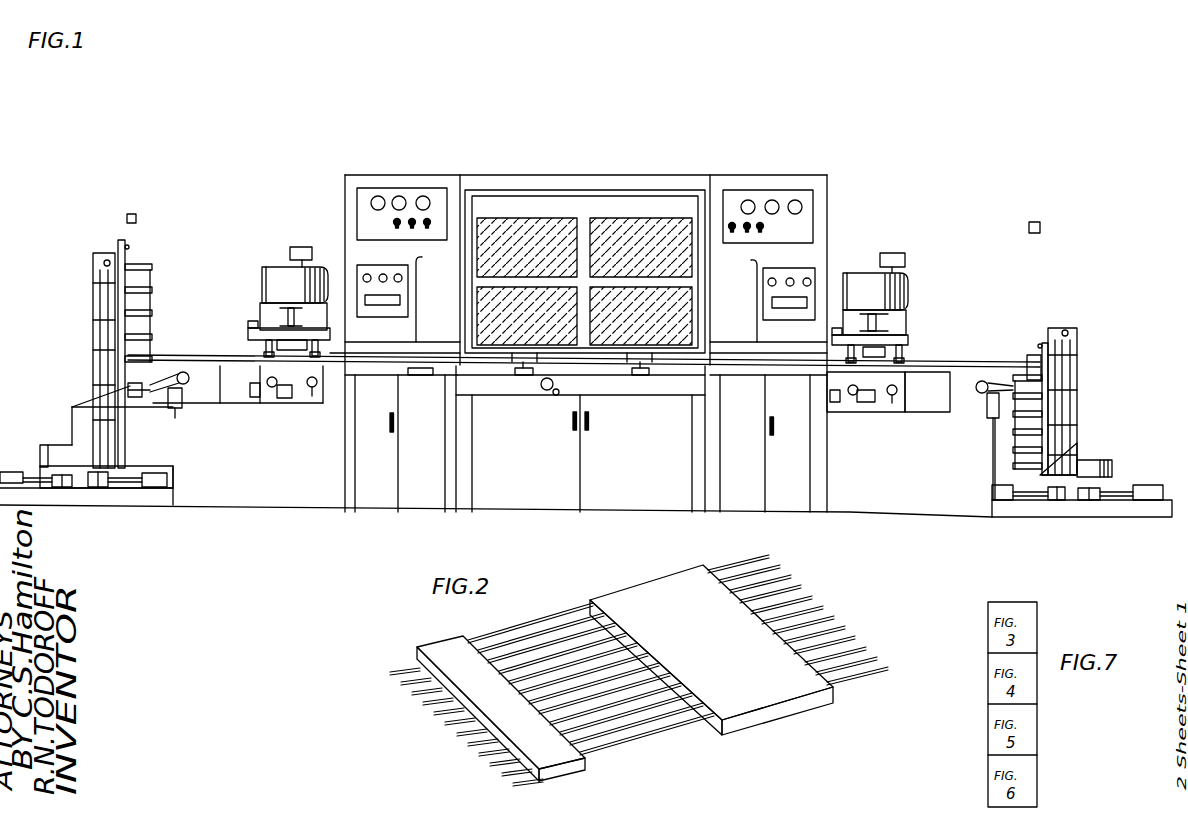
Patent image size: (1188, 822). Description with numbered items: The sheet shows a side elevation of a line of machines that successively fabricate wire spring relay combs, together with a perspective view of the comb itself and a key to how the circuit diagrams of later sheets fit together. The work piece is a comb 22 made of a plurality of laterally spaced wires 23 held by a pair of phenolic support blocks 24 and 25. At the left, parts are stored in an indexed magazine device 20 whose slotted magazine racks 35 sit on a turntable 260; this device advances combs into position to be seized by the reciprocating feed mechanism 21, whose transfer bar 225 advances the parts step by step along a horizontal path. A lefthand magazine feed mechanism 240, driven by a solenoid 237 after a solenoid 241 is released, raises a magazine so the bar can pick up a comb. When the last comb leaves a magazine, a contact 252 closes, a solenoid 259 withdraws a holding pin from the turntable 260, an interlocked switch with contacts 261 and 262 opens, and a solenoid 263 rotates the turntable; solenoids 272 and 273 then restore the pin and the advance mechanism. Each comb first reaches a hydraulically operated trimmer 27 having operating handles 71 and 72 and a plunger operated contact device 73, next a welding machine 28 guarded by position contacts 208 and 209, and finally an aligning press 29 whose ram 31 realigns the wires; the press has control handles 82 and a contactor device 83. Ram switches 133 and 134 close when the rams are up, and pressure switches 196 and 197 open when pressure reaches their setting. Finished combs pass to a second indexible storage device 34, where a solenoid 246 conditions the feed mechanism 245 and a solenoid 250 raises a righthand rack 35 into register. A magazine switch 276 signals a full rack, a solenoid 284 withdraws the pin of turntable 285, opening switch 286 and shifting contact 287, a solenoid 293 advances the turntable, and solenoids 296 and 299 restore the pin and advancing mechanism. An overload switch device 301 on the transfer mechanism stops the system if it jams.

In FIG. 1, the indexed magazine device 20 is at (95, 206).
In FIG. 1, the reciprocating feed mechanism 21 is at (160, 354).
In FIG. 1, the wire spring relay comb 22 is at (135, 398).
In FIG. 2, the wire spring relay comb 22 is at (625, 580).
In FIG. 2, the wires 23 is at (888, 667).
In FIG. 2, the phenolic support block 24 is at (570, 771).
In FIG. 2, the phenolic support block 25 is at (770, 696).
In FIG. 1, the hydraulically operated trimmer 27 is at (272, 275).
In FIG. 1, the welding machine 28 is at (640, 236).
In FIG. 1, the press 29 is at (858, 278).
In FIG. 1, the ram 31 is at (905, 340).
In FIG. 1, the second indexible storage device 34 is at (1059, 297).
In FIG. 1, the magazine rack 35 is at (140, 266).
In FIG. 1, the operating handle 71 is at (267, 382).
In FIG. 1, the operating handle 72 is at (320, 382).
In FIG. 1, the plunger operated contact device 73 is at (286, 398).
In FIG. 1, the control handle 82 is at (890, 397).
In FIG. 1, the plunger-operated contactor device 83 is at (862, 403).
In FIG. 1, the ram switch 133 is at (248, 326).
In FIG. 1, the ram switch 134 is at (832, 339).
In FIG. 1, the pressure switch 196 is at (303, 248).
In FIG. 1, the pressure switch 197 is at (895, 258).
In FIG. 1, the contact 208 is at (523, 376).
In FIG. 1, the contact 209 is at (640, 376).
In FIG. 1, the transfer bar 225 is at (232, 358).
In FIG. 1, the solenoid 237 is at (190, 404).
In FIG. 1, the lefthand magazine feed mechanism 240 is at (185, 352).
In FIG. 1, the solenoid 241 is at (196, 415).
In FIG. 1, the feed mechanism 245 is at (986, 368).
In FIG. 1, the solenoid 246 is at (986, 410).
In FIG. 1, the solenoid 250 is at (993, 430).
In FIG. 1, the contact 252 is at (133, 214).
In FIG. 1, the solenoid 259 is at (58, 488).
In FIG. 1, the turntable 260 is at (72, 437).
In FIG. 1, the contact 261 is at (92, 488).
In FIG. 1, the contact 262 is at (100, 488).
In FIG. 1, the solenoid 263 is at (12, 470).
In FIG. 1, the solenoid 272 is at (68, 488).
In FIG. 1, the solenoid 273 is at (152, 473).
In FIG. 1, the magazine switch 276 is at (1036, 222).
In FIG. 1, the solenoid 284 is at (1095, 500).
In FIG. 1, the turntable 285 is at (1098, 465).
In FIG. 1, the switch 286 is at (1052, 500).
In FIG. 1, the contact 287 is at (1058, 500).
In FIG. 1, the solenoid 293 is at (1150, 486).
In FIG. 1, the solenoid 296 is at (1085, 500).
In FIG. 1, the solenoid 299 is at (992, 500).
In FIG. 1, the overload switch device 301 is at (418, 376).